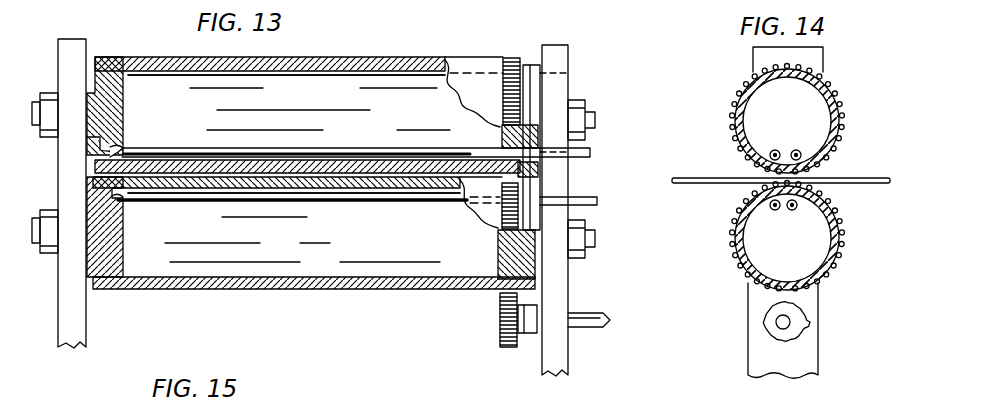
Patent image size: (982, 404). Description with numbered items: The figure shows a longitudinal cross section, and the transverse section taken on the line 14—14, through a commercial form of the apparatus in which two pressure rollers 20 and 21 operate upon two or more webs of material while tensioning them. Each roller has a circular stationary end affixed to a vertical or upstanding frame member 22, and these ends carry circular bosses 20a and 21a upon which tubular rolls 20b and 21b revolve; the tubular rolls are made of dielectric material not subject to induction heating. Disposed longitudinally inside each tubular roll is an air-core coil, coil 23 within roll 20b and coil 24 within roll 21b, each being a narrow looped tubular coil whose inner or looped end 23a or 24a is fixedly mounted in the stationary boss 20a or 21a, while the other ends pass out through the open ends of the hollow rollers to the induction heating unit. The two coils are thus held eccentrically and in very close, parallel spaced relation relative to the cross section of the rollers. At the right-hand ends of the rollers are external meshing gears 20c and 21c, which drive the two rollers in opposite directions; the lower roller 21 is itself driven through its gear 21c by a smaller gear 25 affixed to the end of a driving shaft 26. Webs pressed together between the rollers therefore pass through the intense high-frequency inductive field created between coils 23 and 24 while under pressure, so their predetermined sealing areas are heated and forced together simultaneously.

In FIG. 13, the section line 14 is at (475, 53).
In FIG. 13, the pressure roller 20 is at (312, 100).
In FIG. 14, the pressure roller 20 is at (774, 118).
In FIG. 13, the circular boss 20a is at (127, 92).
In FIG. 13, the tubular roll 20b is at (275, 65).
In FIG. 14, the tubular roll 20b is at (746, 99).
In FIG. 13, the gear 20c is at (510, 58).
In FIG. 14, the gear 20c is at (736, 113).
In FIG. 13, the pressure roller 21 is at (311, 247).
In FIG. 14, the pressure roller 21 is at (775, 236).
In FIG. 13, the circular boss 21a is at (110, 248).
In FIG. 13, the tubular roll 21b is at (312, 258).
In FIG. 14, the tubular roll 21b is at (800, 282).
In FIG. 13, the gear 21c is at (500, 217).
In FIG. 14, the gear 21c is at (734, 247).
In FIG. 13, the frame member 22 is at (72, 55).
In FIG. 13, the air-core coil 23 is at (350, 140).
In FIG. 14, the air-core coil 23 is at (795, 150).
In FIG. 13, the looped end of coil 23a is at (123, 148).
In FIG. 13, the air-core coil 24 is at (354, 213).
In FIG. 14, the air-core coil 24 is at (789, 219).
In FIG. 13, the looped end of coil 24a is at (117, 195).
In FIG. 13, the gear 25 is at (508, 347).
In FIG. 14, the gear 25 is at (756, 328).
In FIG. 13, the driving shaft 26 is at (590, 318).
In FIG. 14, the driving shaft 26 is at (790, 318).